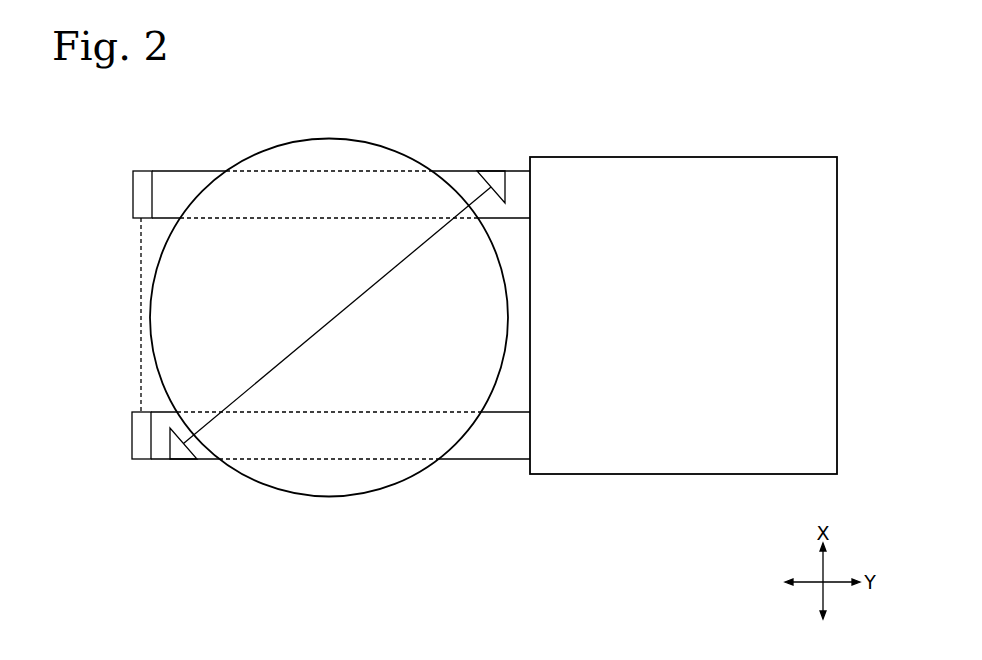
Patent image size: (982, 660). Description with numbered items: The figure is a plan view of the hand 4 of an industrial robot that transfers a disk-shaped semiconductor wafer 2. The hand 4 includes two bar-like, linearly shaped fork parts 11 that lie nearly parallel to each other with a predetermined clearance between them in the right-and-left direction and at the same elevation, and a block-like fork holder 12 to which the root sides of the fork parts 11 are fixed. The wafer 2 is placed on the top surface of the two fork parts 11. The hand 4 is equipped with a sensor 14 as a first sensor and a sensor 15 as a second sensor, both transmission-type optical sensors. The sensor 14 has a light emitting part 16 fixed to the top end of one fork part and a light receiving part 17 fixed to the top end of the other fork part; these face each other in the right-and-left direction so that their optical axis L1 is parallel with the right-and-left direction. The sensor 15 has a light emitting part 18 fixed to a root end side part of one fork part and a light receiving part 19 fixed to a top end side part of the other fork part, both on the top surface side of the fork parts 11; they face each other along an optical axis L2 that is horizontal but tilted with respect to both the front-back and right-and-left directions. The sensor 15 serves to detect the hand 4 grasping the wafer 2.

The semiconductor wafer 2 is at (330, 138).
The hand 4 is at (817, 128).
The fork parts 11 is at (451, 171).
The fork holder 12 is at (682, 157).
The sensor 14 is at (173, 133).
The sensor 15 is at (522, 139).
The light emitting part 16 is at (143, 171).
The light receiving part 17 is at (143, 460).
The light emitting part 18 is at (490, 171).
The light receiving part 19 is at (180, 460).
The optical axis L1 is at (141, 260).
The optical axis L2 is at (338, 315).